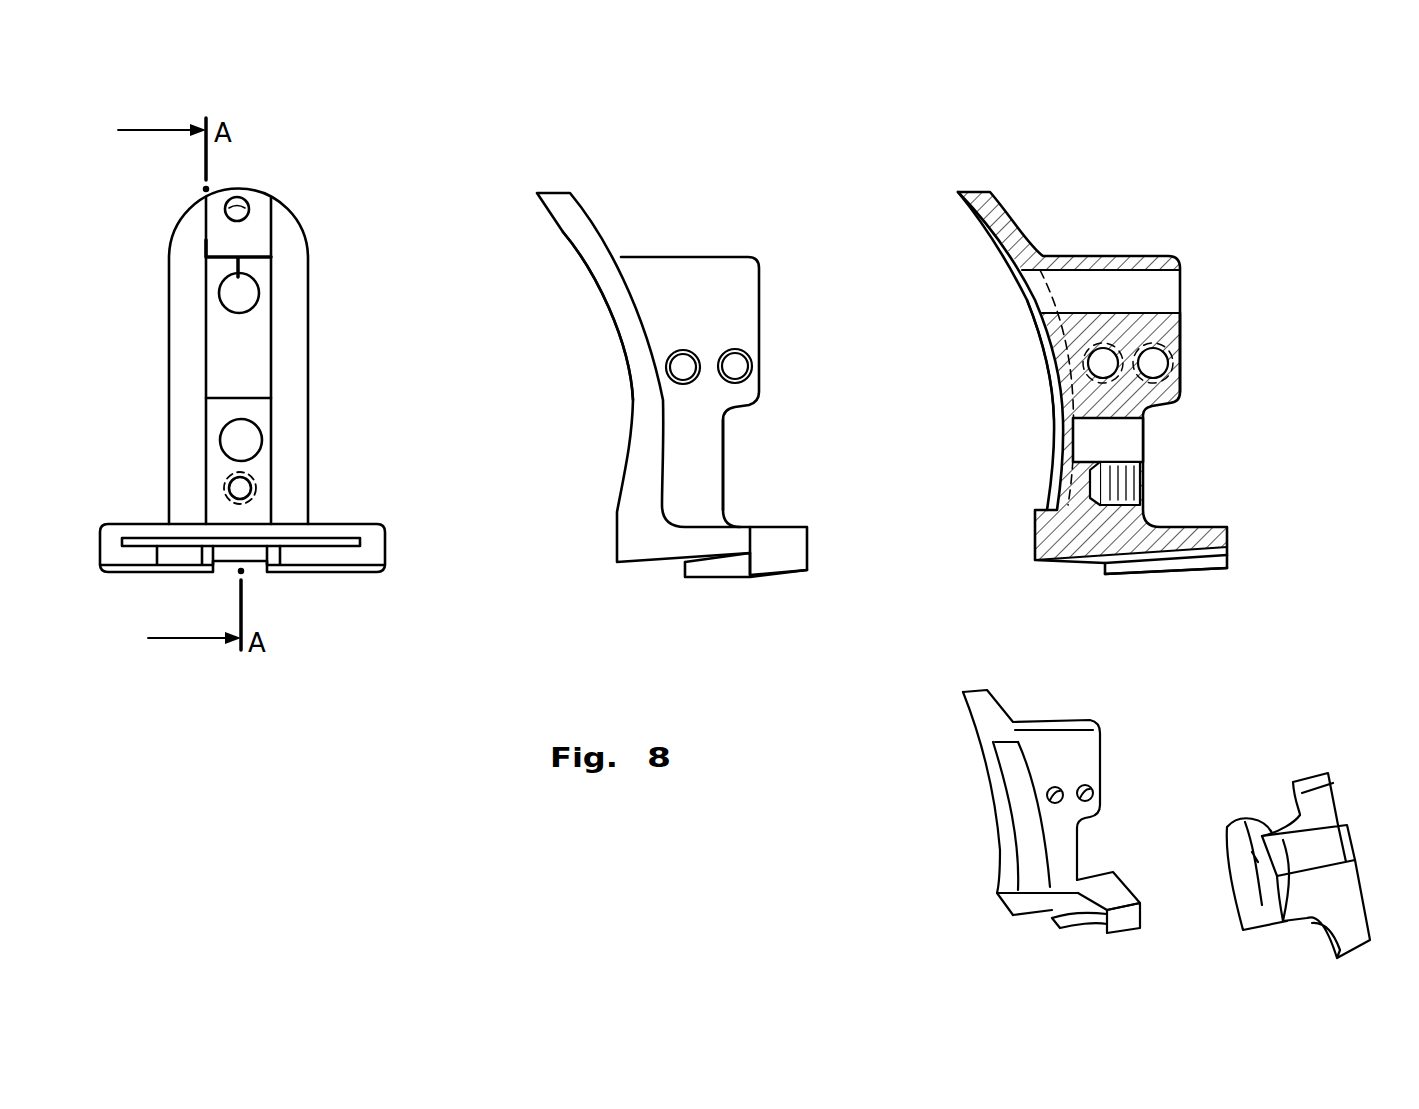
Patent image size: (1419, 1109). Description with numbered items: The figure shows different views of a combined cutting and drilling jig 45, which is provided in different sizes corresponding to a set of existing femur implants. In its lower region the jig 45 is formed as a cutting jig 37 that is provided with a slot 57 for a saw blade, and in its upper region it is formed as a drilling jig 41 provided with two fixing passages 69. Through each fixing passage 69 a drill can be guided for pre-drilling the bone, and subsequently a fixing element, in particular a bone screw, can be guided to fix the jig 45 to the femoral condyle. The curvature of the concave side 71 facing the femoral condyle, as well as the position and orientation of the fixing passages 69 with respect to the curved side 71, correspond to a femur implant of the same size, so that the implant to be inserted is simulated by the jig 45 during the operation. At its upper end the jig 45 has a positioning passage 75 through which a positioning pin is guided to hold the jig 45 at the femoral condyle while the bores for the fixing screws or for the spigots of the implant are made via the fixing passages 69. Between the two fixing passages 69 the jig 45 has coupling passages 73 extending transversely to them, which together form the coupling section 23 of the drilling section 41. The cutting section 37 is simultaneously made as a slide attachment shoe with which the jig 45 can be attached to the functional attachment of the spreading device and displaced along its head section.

The combined cutting and drilling jig 45 is at (152, 322).
The positioning passage 75 is at (243, 199).
The fixing passages 69 is at (248, 290).
The coupling passages 73 is at (738, 366).
The slot 57 is at (163, 548).
The concave side 71 is at (601, 333).
The coupling section 23 is at (726, 402).
The drilling jig 41 is at (1197, 320).
The cutting jig 37 is at (1218, 518).